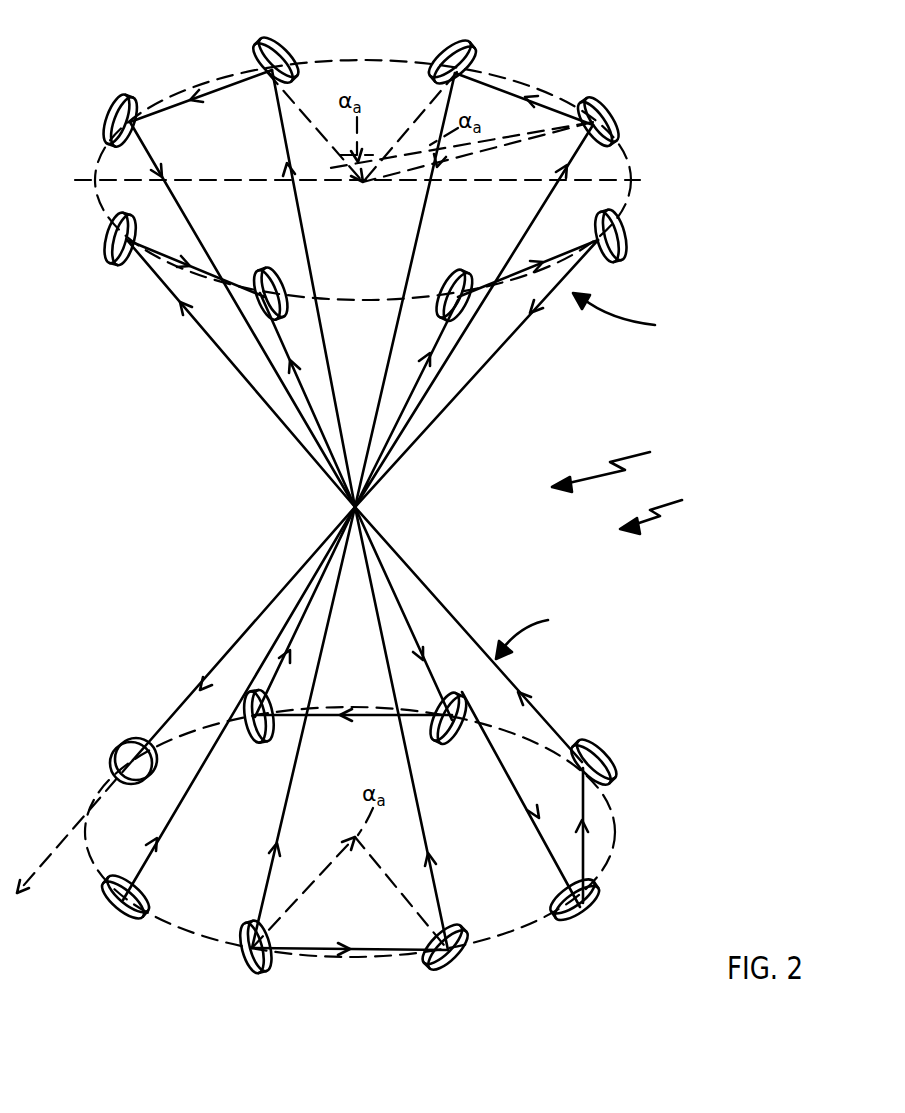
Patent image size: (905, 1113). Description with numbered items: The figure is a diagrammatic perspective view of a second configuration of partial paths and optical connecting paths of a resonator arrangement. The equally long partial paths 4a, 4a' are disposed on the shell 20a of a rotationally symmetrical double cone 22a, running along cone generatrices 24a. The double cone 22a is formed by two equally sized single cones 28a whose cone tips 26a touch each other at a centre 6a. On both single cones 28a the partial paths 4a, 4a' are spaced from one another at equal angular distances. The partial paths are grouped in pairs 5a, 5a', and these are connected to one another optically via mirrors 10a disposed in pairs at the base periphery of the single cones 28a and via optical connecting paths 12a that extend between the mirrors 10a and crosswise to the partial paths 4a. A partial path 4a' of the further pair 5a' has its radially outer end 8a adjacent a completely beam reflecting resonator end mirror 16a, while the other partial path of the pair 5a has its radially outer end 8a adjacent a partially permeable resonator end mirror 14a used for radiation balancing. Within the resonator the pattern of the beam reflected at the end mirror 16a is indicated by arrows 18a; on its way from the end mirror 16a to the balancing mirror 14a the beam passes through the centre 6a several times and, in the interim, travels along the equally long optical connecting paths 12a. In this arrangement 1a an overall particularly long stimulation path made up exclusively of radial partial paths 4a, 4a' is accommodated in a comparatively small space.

The light deflecting device 1a is at (664, 508).
The partial path 4a is at (376, 576).
The partial path 4a' is at (239, 703).
The partial path pair 5a is at (470, 613).
The further pair of partial paths 5a' is at (288, 612).
The centre 6a is at (380, 505).
The radially outer end 8a is at (612, 172).
The mirror 10a is at (607, 113).
The optical connecting path 12a is at (523, 93).
The partially permeable resonator end mirror 14a is at (125, 745).
The completely beam reflecting resonator end mirror 16a is at (113, 910).
The arrows 18a is at (185, 275).
The shell 20a is at (495, 360).
The double cone 22a is at (620, 464).
The cone generatrix 24a is at (300, 445).
The cone tip 26a is at (345, 505).
The single cone 28a is at (594, 476).